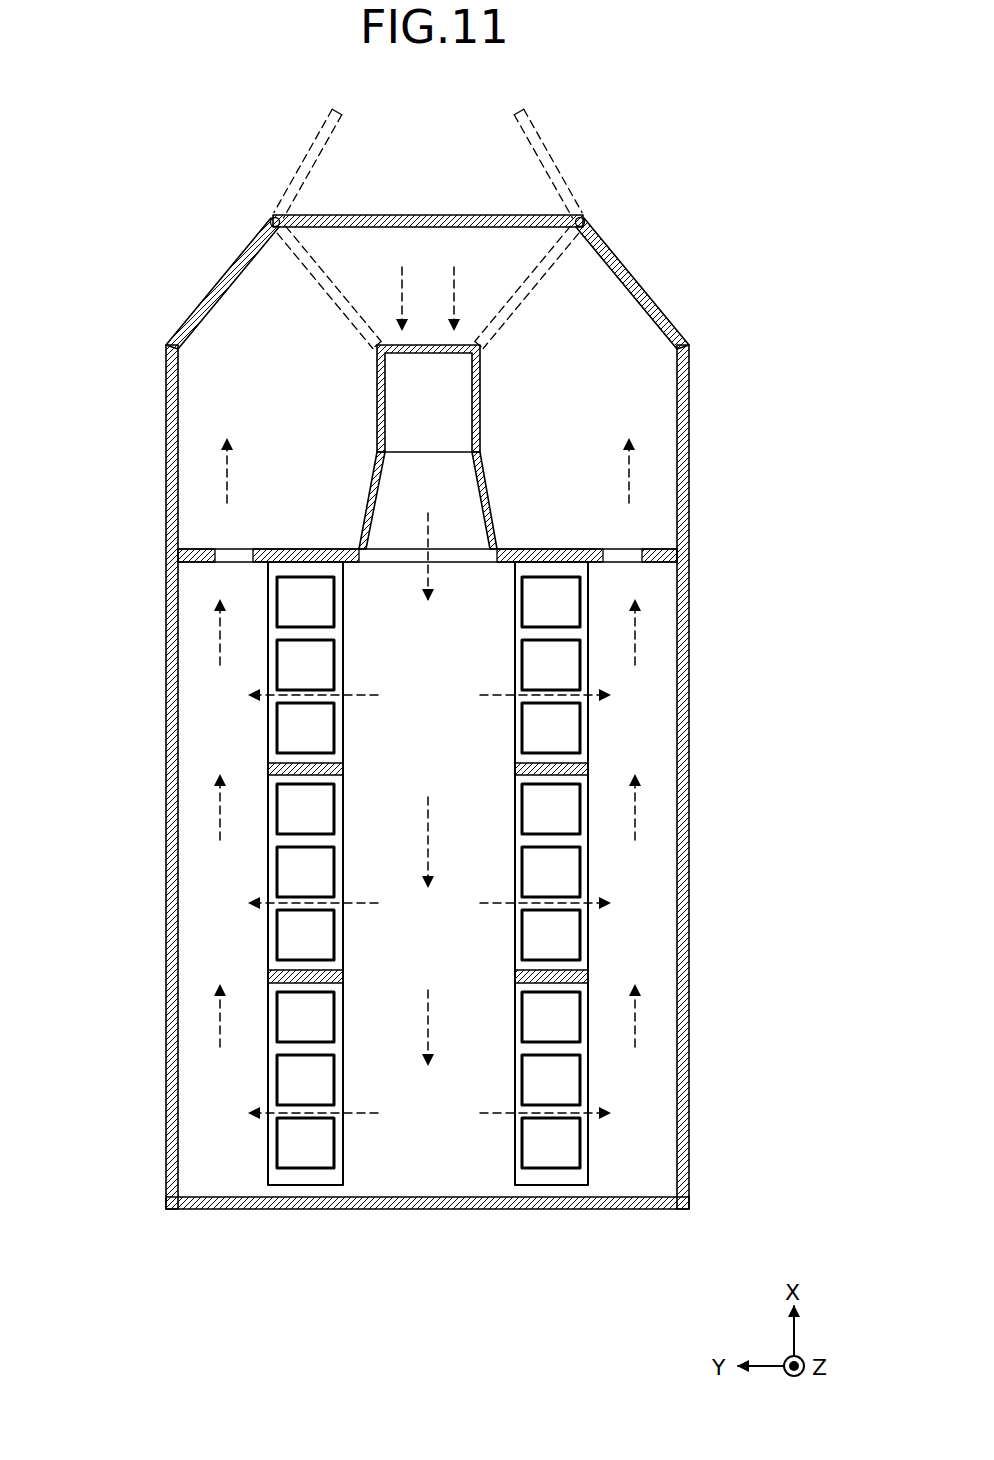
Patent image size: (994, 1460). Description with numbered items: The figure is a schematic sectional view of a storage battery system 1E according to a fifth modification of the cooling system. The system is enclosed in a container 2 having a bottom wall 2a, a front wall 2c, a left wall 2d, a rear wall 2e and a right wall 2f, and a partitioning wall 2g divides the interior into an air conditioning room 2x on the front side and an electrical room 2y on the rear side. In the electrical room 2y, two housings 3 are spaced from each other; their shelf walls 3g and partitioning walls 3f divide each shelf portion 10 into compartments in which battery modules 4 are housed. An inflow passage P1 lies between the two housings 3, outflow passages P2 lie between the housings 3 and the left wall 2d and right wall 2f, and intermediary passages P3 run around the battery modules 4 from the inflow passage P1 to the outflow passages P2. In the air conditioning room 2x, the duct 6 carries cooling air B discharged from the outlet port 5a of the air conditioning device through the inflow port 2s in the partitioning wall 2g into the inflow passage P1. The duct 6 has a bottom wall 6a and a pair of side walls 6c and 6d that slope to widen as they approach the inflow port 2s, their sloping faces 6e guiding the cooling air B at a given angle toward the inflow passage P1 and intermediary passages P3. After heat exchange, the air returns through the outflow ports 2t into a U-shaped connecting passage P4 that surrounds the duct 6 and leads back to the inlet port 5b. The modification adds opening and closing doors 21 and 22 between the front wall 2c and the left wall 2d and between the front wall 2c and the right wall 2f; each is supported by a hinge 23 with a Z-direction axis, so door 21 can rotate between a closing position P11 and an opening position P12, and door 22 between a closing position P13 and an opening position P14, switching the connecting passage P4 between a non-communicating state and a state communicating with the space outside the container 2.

The storage battery system 1E is at (130, 138).
The container 2 is at (692, 441).
The bottom wall 2a is at (386, 1197).
The front wall 2c is at (437, 215).
The left wall 2d is at (166, 608).
The rear wall 2e is at (262, 1210).
The right wall 2f is at (690, 578).
The partitioning wall 2g is at (285, 548).
The inflow port 2s is at (478, 563).
The outflow port 2t is at (237, 563).
The air conditioning room 2x is at (195, 401).
The electrical room 2y is at (470, 1175).
The housing 3 is at (590, 966).
The partitioning wall 3f is at (588, 770).
The shelf wall 3g is at (277, 840).
The shelf portion 10 is at (305, 873).
The battery module 4 is at (568, 672).
The outlet port 5a is at (398, 454).
The inlet port 5b is at (428, 340).
The duct 6 is at (690, 369).
The bottom wall 6a is at (487, 469).
The side wall 6c is at (364, 528).
The side wall 6d is at (494, 524).
The sloping face 6e is at (376, 457).
The opening and closing door 21 is at (715, 313).
The opening and closing door 22 is at (497, 215).
The hinge 23 is at (270, 222).
The cooling air B is at (427, 570).
The inflow passage P1 is at (373, 957).
The outflow passage P2 is at (197, 763).
The intermediary passage P3 is at (302, 1115).
The connecting passage P4 is at (198, 437).
The closing position P11 is at (222, 283).
The opening position P12 is at (329, 287).
The closing position P13 is at (428, 221).
The opening position P14 is at (308, 163).